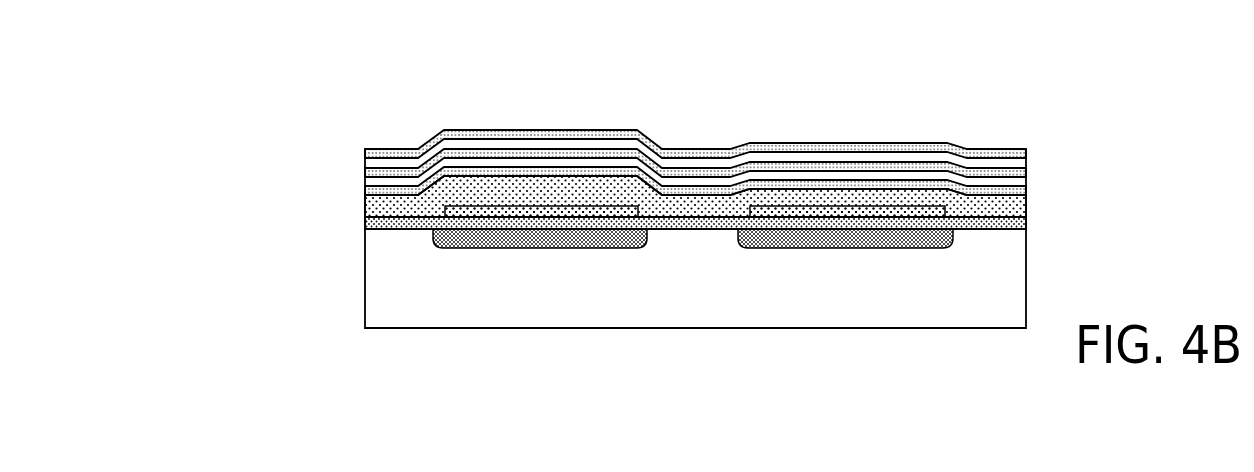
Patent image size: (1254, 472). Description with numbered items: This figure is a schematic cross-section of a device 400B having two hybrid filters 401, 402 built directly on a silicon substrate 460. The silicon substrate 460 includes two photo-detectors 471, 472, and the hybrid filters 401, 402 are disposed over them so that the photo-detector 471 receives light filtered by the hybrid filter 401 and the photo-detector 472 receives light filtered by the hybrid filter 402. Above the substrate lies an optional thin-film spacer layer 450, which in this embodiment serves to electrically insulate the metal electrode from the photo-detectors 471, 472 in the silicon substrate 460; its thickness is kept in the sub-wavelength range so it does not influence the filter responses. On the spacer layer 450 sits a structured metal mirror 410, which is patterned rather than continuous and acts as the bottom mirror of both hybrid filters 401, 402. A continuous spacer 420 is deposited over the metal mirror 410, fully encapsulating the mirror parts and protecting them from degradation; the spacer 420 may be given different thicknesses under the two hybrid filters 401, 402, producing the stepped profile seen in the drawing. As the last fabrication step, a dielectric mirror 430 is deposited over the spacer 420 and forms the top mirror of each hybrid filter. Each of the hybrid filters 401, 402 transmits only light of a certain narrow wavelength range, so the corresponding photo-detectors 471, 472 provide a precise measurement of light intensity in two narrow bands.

The device 400B is at (988, 127).
The hybrid filter 401 is at (537, 90).
The hybrid filter 402 is at (858, 90).
The structured metal mirror 410 is at (447, 207).
The spacer 420 is at (467, 195).
The dielectric mirror 430 is at (352, 150).
The spacer layer 450 is at (443, 223).
The silicon substrate 460 is at (695, 278).
The photo-detector 471 is at (482, 243).
The photo-detector 472 is at (880, 243).